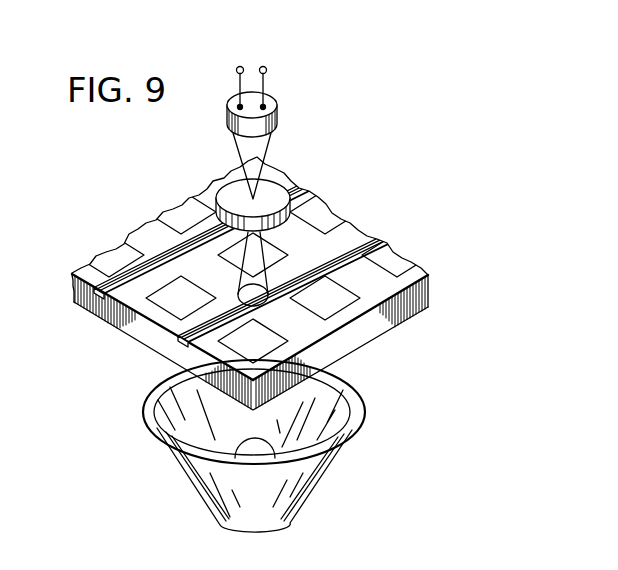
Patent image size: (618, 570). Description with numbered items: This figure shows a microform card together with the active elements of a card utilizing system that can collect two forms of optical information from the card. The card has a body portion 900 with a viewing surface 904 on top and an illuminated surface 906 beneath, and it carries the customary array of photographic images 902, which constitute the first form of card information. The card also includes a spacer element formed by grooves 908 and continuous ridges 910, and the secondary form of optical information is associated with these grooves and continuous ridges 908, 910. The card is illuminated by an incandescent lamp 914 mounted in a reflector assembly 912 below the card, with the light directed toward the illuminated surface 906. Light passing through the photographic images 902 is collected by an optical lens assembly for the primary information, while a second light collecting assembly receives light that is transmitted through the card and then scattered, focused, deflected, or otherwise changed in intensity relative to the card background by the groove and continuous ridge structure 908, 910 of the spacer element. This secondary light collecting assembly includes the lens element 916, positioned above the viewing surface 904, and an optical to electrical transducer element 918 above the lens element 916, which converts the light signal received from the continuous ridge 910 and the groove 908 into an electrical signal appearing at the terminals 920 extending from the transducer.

The body portion 900 is at (340, 343).
The photographic images 902 is at (272, 253).
The viewing surface 904 is at (160, 235).
The illuminated surface 906 is at (143, 345).
The grooves 908 is at (96, 312).
The continuous ridges 910 is at (157, 252).
The reflector assembly 912 is at (148, 415).
The incandescent lamp 914 is at (252, 452).
The lens element 916 is at (287, 176).
The optical to electrical transducer element 918 is at (260, 118).
The terminals 920 is at (242, 66).